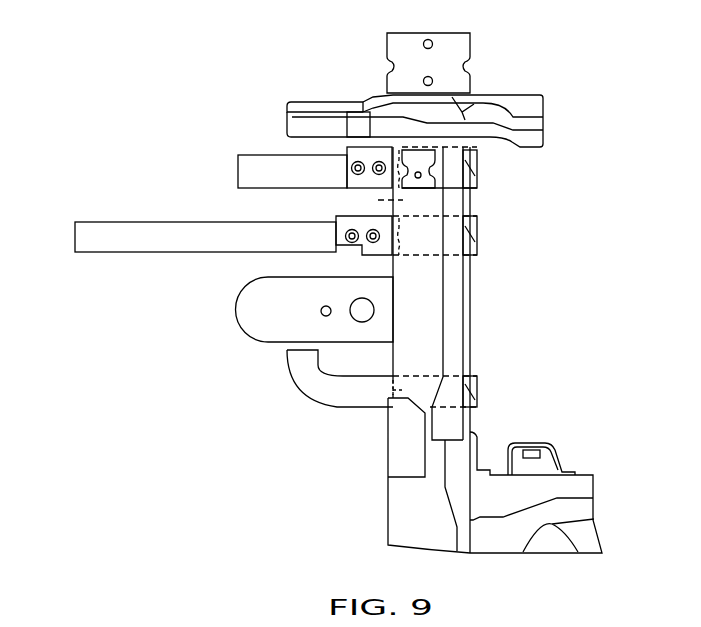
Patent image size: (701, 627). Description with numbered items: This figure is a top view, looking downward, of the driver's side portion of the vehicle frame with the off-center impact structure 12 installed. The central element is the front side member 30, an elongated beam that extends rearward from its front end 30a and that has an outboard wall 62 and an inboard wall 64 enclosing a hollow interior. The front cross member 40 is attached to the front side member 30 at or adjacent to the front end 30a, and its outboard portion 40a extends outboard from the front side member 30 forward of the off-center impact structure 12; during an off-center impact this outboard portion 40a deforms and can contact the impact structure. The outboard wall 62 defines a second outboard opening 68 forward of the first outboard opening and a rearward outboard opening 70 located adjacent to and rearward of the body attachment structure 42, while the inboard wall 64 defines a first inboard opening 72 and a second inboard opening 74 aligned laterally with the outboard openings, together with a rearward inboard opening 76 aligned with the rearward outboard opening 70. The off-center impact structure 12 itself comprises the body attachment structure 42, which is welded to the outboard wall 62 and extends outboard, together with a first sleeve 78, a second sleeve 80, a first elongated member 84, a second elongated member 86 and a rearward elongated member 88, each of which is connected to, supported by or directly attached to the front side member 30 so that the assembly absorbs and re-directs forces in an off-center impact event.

The off-center impact structure 12 is at (214, 45).
The front end 30a is at (448, 32).
The front cross member 40 is at (436, 96).
The outboard portion 40a is at (312, 103).
The second sleeve 80 is at (355, 155).
The second elongated member 86 is at (255, 174).
The second inboard opening 74 is at (478, 177).
The first inboard opening 72 is at (478, 247).
The first sleeve 78 is at (350, 221).
The first elongated member 84 is at (147, 236).
The second outboard opening 68 is at (390, 258).
The front side member 30 is at (466, 350).
The inboard wall 64 is at (470, 338).
The body attachment structure 42 is at (262, 315).
The rearward elongated member 88 is at (318, 384).
The rearward inboard opening 76 is at (478, 403).
The rearward outboard opening 70 is at (389, 420).
The outboard wall 62 is at (388, 453).